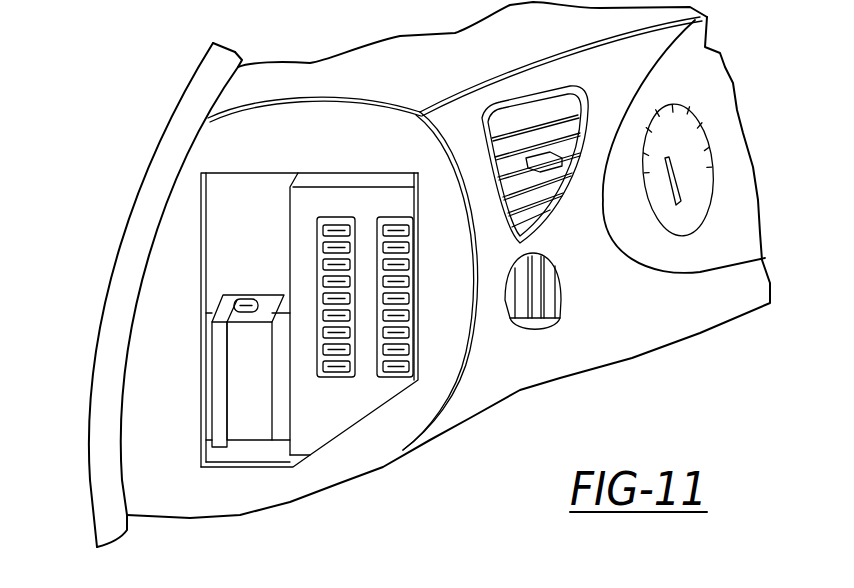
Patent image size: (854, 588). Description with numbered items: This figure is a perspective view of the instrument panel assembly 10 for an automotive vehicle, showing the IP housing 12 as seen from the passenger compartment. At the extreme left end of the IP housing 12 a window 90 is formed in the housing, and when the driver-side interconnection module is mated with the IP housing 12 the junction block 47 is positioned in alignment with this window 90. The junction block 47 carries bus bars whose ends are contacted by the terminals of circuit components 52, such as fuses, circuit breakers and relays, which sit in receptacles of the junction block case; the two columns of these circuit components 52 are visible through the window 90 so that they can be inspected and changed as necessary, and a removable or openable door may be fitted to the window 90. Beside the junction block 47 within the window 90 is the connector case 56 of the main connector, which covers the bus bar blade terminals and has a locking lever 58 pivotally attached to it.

The instrument panel assembly 10 is at (640, 362).
The IP housing 12 is at (311, 66).
The junction block 47 is at (338, 212).
The circuit components 52 is at (322, 298).
The connector case 56 is at (262, 288).
The locking lever 58 is at (214, 368).
The window 90 is at (228, 201).